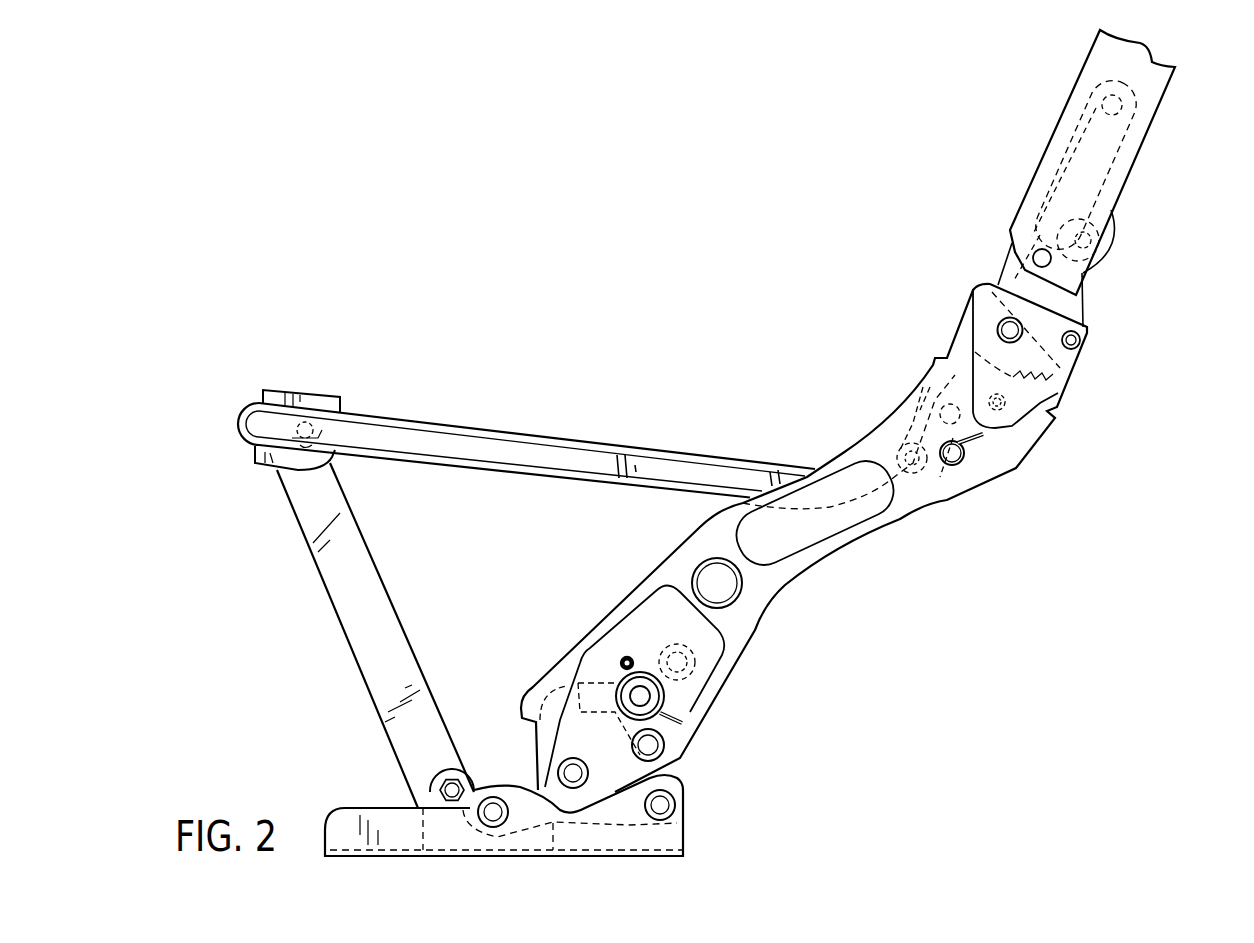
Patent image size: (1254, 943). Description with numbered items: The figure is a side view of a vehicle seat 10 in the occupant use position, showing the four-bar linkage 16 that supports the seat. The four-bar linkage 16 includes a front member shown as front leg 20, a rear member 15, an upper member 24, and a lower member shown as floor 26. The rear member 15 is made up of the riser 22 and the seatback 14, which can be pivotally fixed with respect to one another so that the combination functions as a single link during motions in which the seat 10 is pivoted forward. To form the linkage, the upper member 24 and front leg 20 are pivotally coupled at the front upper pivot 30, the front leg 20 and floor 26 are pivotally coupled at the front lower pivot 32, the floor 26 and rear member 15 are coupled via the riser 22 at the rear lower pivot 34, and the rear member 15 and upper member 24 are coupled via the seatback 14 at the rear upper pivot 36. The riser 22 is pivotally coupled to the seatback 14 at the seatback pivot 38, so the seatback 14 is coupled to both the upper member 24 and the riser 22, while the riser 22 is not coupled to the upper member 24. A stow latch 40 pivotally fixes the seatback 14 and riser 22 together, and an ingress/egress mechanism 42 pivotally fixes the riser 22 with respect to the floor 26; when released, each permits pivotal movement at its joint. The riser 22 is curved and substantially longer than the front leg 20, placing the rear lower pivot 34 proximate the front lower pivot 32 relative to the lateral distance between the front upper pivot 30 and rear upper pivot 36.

The vehicle seat 10 is at (320, 174).
The seatback 14 is at (1155, 87).
The rear member 15 is at (1142, 363).
The four-bar linkage 16 is at (947, 684).
The front leg 20 is at (352, 613).
The riser 22 is at (725, 628).
The upper member 24 is at (478, 447).
The floor 26 is at (455, 835).
The front upper pivot 30 is at (305, 400).
The front lower pivot 32 is at (455, 790).
The rear lower pivot 34 is at (572, 773).
The rear upper pivot 36 is at (1108, 258).
The seatback pivot 38 is at (1010, 330).
The stow latch 40 is at (1050, 360).
The ingress/egress mechanism 42 is at (700, 725).